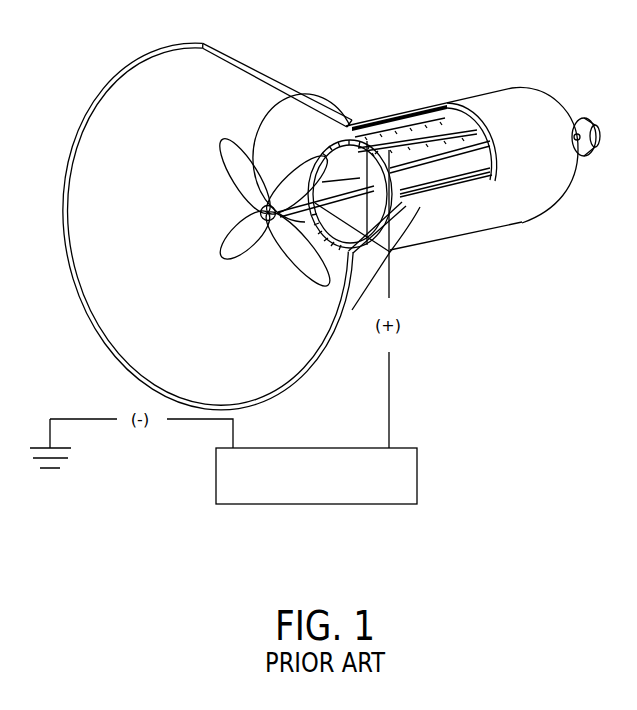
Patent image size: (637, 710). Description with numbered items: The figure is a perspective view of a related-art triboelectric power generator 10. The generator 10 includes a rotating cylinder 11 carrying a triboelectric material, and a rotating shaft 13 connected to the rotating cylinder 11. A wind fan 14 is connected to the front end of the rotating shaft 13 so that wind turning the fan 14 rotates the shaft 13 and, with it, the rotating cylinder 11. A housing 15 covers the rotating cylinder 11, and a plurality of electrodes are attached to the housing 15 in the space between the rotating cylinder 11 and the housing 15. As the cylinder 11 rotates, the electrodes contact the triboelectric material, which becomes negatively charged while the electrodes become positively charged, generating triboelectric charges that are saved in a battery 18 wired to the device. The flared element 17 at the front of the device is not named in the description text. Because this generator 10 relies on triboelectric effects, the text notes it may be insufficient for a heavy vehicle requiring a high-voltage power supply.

The triboelectric power generator 10 is at (426, 72).
The rotating cylinder 11 is at (466, 162).
The rotating shaft 13 is at (391, 252).
The wind fan 14 is at (238, 255).
The housing 15 is at (477, 97).
The conical collector 17 is at (81, 127).
The battery 18 is at (418, 473).